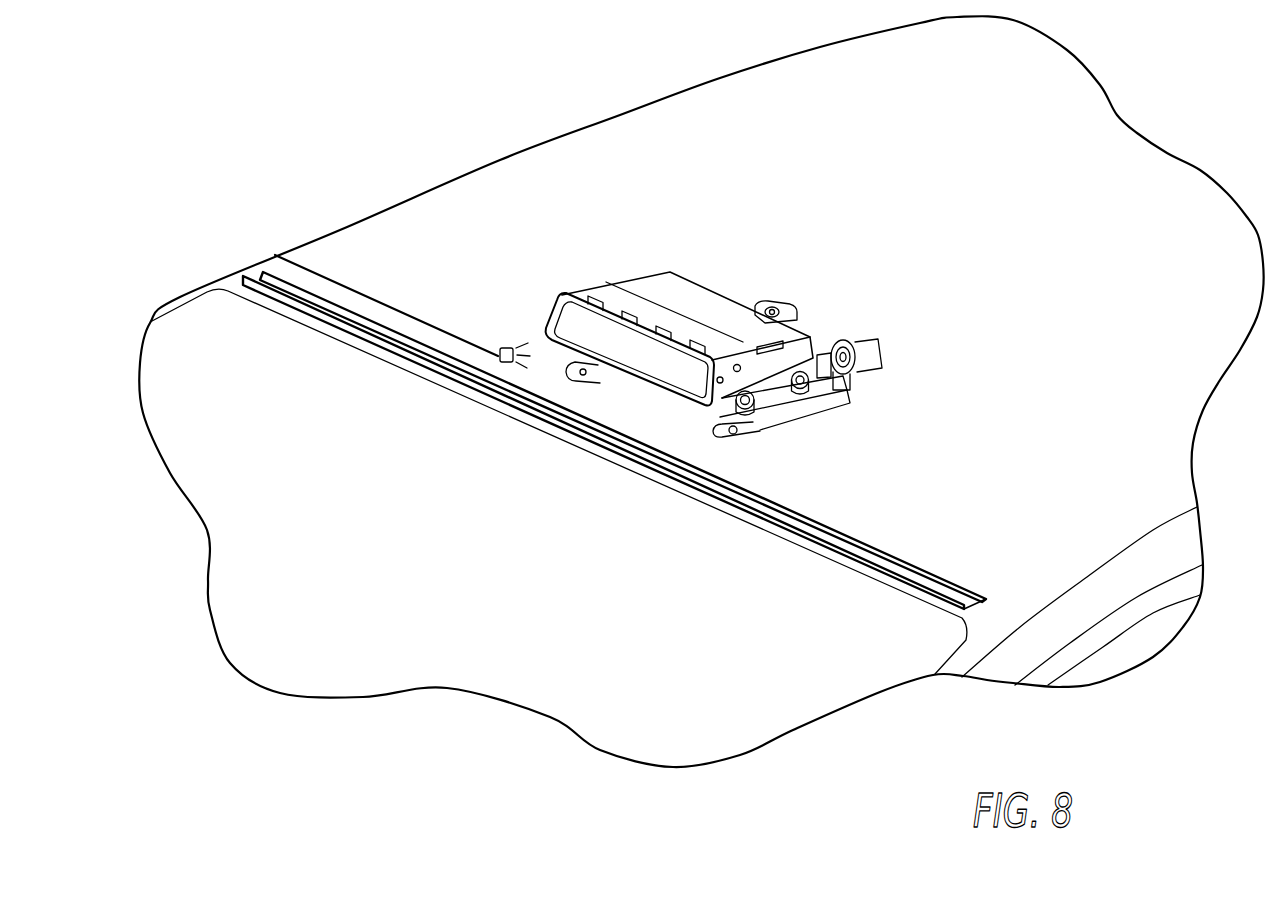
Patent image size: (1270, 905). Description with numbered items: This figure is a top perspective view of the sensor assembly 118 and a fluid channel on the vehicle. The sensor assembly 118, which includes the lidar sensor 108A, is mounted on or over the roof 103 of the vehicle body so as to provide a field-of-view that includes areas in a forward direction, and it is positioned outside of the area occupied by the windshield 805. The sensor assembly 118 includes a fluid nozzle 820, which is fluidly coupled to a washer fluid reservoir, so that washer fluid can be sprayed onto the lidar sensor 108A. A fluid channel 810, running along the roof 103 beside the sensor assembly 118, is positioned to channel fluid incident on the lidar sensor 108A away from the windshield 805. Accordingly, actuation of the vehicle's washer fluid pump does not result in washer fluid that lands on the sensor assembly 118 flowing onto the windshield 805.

The roof 103 is at (1128, 283).
The windshield 805 is at (490, 551).
The fluid channel 810 is at (952, 580).
The fluid nozzle 820 is at (503, 347).
The lidar sensor 108A is at (640, 277).
The sensor assembly 118 is at (687, 238).